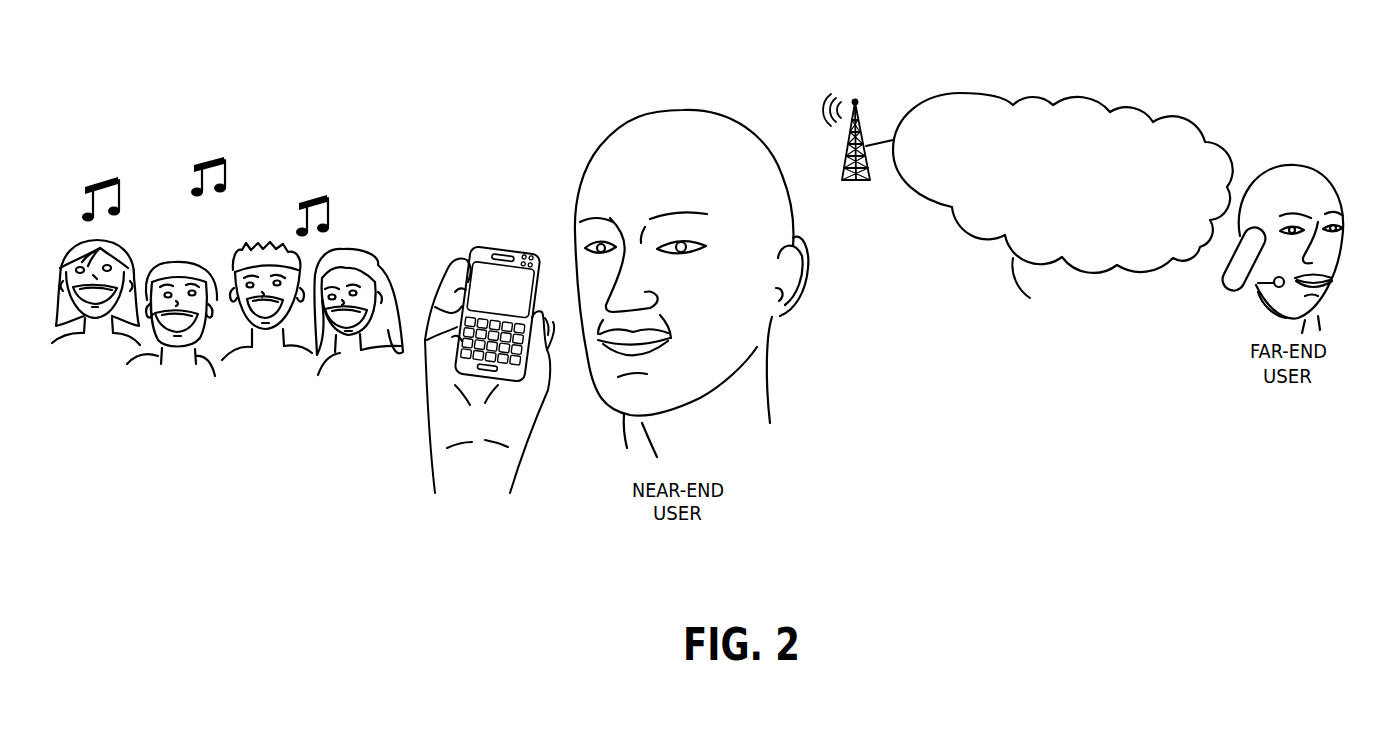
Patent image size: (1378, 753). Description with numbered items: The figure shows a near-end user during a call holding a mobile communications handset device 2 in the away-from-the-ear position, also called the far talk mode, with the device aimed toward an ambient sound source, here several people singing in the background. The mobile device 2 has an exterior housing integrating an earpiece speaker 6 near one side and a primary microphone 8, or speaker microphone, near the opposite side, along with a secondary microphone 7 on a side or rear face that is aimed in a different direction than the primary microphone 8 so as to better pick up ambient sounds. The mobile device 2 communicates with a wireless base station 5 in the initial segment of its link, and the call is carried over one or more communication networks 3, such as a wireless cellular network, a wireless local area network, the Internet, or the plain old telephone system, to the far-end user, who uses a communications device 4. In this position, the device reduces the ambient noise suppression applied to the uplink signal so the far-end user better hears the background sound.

The mobile communications handset device 2 is at (486, 247).
The communication networks 3 is at (1063, 223).
The communications device 4 is at (1229, 278).
The wireless base station 5 is at (855, 100).
The earpiece speaker 6 is at (502, 252).
The secondary microphone 7 is at (545, 262).
The primary microphone 8 is at (486, 373).